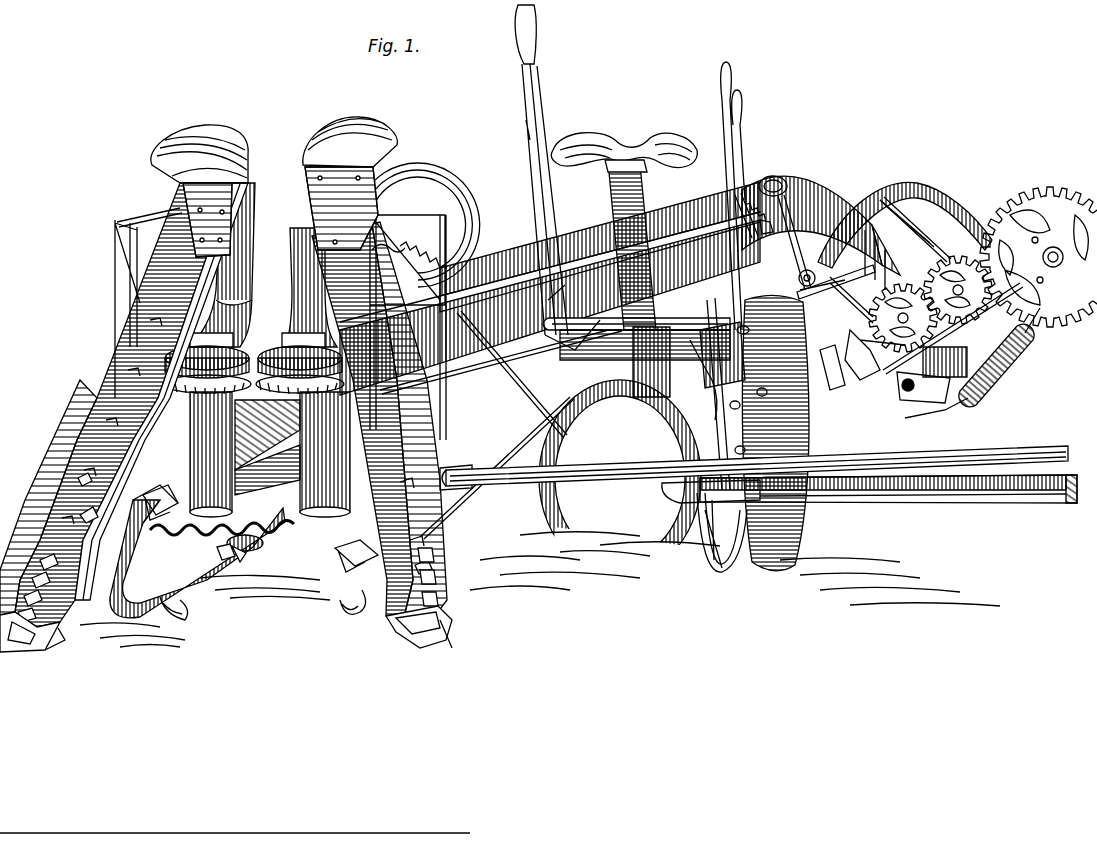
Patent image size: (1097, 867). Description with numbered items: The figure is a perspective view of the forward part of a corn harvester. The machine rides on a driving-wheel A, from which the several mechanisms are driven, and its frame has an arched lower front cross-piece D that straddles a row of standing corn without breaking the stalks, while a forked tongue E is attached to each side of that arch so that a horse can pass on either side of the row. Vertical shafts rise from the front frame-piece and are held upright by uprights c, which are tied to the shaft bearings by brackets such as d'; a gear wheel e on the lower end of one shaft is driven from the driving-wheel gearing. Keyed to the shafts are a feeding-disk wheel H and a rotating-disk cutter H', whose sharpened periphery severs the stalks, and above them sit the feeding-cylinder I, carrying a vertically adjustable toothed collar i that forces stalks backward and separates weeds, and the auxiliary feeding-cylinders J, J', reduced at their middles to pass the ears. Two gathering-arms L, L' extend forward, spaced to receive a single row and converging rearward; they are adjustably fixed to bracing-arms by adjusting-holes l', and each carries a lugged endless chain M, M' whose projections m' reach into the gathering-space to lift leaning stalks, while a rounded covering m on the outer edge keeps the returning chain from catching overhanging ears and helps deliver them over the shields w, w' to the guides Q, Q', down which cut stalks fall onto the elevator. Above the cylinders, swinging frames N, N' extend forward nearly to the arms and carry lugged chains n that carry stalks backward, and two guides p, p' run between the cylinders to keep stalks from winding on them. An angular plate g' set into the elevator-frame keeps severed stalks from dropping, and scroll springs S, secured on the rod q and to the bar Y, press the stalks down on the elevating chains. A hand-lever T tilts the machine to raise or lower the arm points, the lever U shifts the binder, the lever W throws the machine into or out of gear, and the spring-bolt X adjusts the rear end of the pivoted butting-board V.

The guide or shield Q is at (205, 149).
The guide or shield Q' is at (350, 135).
The shield w is at (207, 218).
The shield w' is at (341, 208).
The bracket d' is at (281, 318).
The rod or shaft q is at (409, 248).
The spring S is at (462, 200).
The upright c is at (283, 355).
The auxiliary feeding-cylinder J is at (222, 265).
The auxiliary feeding-cylinder J' is at (309, 287).
The swinging bar or frame N is at (214, 353).
The swinging bar or frame N' is at (300, 349).
The chain n is at (253, 394).
The feeding-cylinder I is at (210, 441).
The adjusting-hole l' is at (345, 454).
The gathering-arm L is at (124, 405).
The gathering-arm L' is at (394, 419).
The endless chain M is at (32, 633).
The endless chain M' is at (417, 631).
The covering m is at (251, 530).
The projection m' is at (96, 528).
The feeding-disk wheel H is at (157, 500).
The rotating-disk cutter H' is at (356, 556).
The gear wheel e is at (180, 540).
The angular plate g' is at (255, 549).
The guide p is at (239, 566).
The guide p' is at (264, 563).
The collar i is at (263, 613).
The hand-lever T is at (537, 62).
The butting-board V is at (624, 265).
The lever U is at (739, 196).
The spring-bolt X is at (742, 188).
The lever W is at (790, 178).
The bar Y is at (838, 186).
The lower cross-piece D is at (580, 398).
The driving-wheel A is at (712, 535).
The tongue E is at (912, 490).